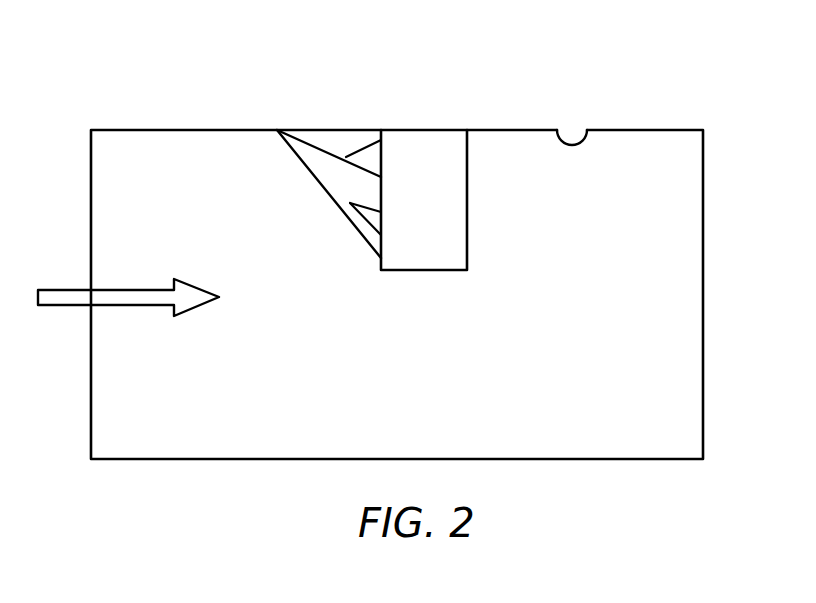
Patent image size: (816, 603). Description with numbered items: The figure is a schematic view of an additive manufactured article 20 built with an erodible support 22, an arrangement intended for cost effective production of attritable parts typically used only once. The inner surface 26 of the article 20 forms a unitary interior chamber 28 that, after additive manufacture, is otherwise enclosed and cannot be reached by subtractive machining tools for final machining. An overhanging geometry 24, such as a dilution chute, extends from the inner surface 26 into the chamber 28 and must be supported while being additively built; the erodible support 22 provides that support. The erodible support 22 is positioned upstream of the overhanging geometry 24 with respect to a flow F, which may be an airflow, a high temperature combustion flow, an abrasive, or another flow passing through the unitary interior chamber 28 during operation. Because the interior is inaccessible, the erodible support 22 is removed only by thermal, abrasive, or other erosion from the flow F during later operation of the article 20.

The additive manufactured article 20 is at (680, 108).
The erodible support 22 is at (324, 145).
The overhanging geometry 24 is at (467, 195).
The inner surface 26 is at (587, 131).
The unitary interior chamber 28 is at (433, 363).
The flow F is at (65, 298).